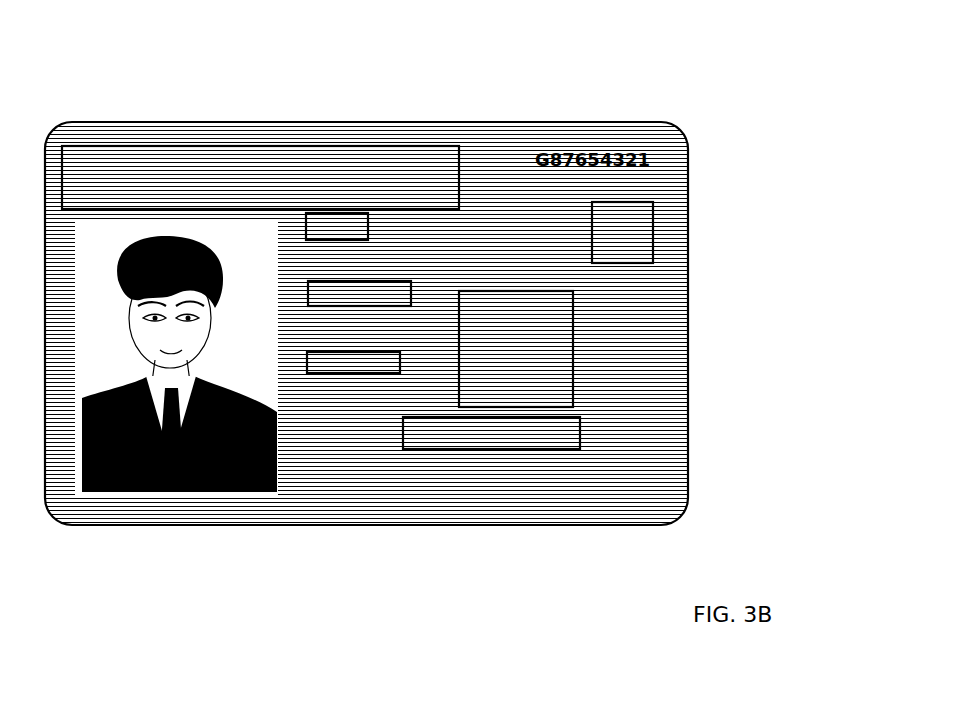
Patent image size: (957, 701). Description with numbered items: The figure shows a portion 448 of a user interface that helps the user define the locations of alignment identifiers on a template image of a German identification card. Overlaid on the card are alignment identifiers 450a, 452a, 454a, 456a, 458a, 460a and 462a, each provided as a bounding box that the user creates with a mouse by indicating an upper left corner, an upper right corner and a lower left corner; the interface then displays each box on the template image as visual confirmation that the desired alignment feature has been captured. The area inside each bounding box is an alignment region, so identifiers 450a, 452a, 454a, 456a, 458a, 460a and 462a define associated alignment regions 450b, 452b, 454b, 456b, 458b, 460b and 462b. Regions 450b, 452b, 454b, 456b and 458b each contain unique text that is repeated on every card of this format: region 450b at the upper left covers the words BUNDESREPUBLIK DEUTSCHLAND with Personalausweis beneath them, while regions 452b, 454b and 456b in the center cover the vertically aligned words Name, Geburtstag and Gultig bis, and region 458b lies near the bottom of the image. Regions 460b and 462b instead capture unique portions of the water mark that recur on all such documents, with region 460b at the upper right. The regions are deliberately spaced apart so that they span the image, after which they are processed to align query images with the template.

The portion of a user interface 448 is at (111, 536).
The alignment identifier 450a is at (183, 148).
The alignment region 450b is at (270, 160).
The alignment identifier 452a is at (321, 212).
The alignment region 452b is at (368, 223).
The alignment identifier 454a is at (455, 268).
The alignment region 454b is at (412, 290).
The alignment identifier 456a is at (320, 385).
The alignment region 456b is at (393, 382).
The alignment identifier 458a is at (582, 447).
The alignment region 458b is at (580, 425).
The alignment identifier 460a is at (653, 202).
The alignment region 460b is at (642, 252).
The alignment identifier 462a is at (573, 354).
The alignment region 462b is at (550, 390).